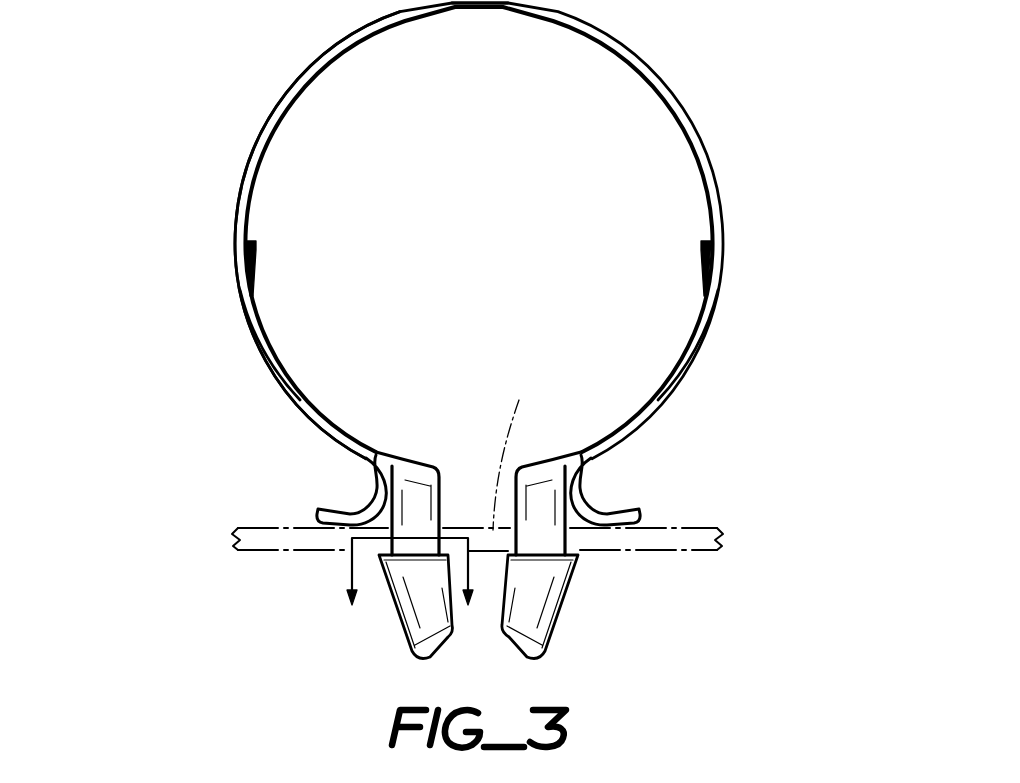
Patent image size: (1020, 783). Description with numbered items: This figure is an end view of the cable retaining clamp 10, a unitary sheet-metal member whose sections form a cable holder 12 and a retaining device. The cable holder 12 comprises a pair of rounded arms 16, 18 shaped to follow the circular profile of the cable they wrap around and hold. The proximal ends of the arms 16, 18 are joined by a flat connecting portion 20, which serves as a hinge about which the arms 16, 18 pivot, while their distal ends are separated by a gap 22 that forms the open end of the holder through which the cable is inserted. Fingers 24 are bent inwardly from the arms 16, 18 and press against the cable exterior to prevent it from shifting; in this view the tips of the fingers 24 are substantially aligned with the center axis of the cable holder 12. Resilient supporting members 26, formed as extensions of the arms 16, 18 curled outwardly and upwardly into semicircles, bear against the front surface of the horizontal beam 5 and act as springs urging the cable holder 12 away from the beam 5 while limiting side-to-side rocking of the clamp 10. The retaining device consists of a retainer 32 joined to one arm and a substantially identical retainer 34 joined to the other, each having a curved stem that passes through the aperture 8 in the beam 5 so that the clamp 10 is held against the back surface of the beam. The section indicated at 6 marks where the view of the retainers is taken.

The horizontal beam 5 is at (595, 540).
The section line 6- 6 is at (409, 574).
The aperture 8 is at (515, 450).
The cable retaining clamp 10 is at (229, 191).
The cable holder 12 is at (719, 191).
The arm 16 is at (257, 337).
The arm 18 is at (698, 345).
The connecting portion 20 is at (487, 2).
The gap 22 is at (441, 500).
The fingers 24 is at (257, 258).
The resilient supporting members 26 is at (345, 500).
The retainer 32 is at (398, 628).
The retainer 34 is at (557, 624).